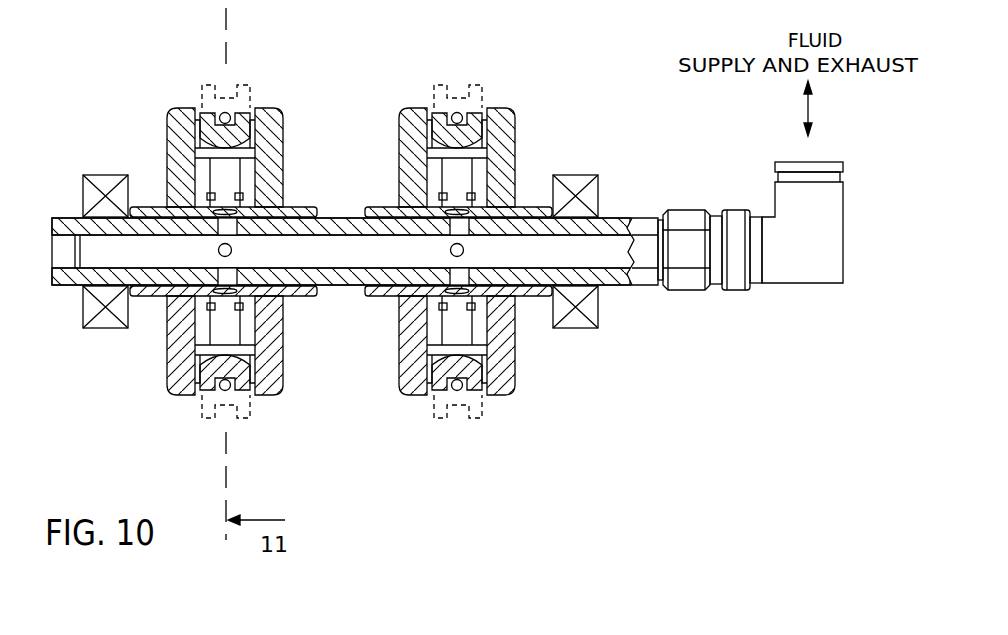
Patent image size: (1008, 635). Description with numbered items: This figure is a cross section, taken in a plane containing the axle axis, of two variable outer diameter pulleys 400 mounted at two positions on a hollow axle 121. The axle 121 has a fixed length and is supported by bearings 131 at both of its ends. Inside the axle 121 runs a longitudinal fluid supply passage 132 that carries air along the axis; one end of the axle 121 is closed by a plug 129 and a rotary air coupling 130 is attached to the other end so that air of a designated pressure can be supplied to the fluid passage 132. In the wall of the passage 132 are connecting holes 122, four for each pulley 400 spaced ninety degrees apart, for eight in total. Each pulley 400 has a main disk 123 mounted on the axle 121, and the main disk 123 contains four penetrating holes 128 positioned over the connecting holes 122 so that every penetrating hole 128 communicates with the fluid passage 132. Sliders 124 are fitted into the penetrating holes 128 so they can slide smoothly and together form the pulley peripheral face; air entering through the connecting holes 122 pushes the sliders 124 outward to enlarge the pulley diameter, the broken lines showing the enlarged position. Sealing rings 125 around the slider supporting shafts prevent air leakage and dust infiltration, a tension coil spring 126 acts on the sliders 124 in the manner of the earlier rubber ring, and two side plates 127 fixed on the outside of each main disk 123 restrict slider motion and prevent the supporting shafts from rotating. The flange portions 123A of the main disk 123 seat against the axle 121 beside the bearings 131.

The variable outer diameter pulley 400 is at (363, 120).
The hollow axle 121 is at (641, 231).
The connecting holes 122 is at (229, 272).
The main disk 123 is at (204, 327).
The mounting flange 123A is at (155, 210).
The slider 124 is at (240, 145).
The sealing ring 125 is at (244, 196).
The tension coil spring 126 is at (219, 113).
The side plate 127 is at (181, 122).
The penetrating hole 128 is at (222, 176).
The plug 129 is at (62, 262).
The rotary air coupling 130 is at (805, 270).
The bearings 131 is at (108, 331).
The fluid supply passage 132 is at (600, 258).